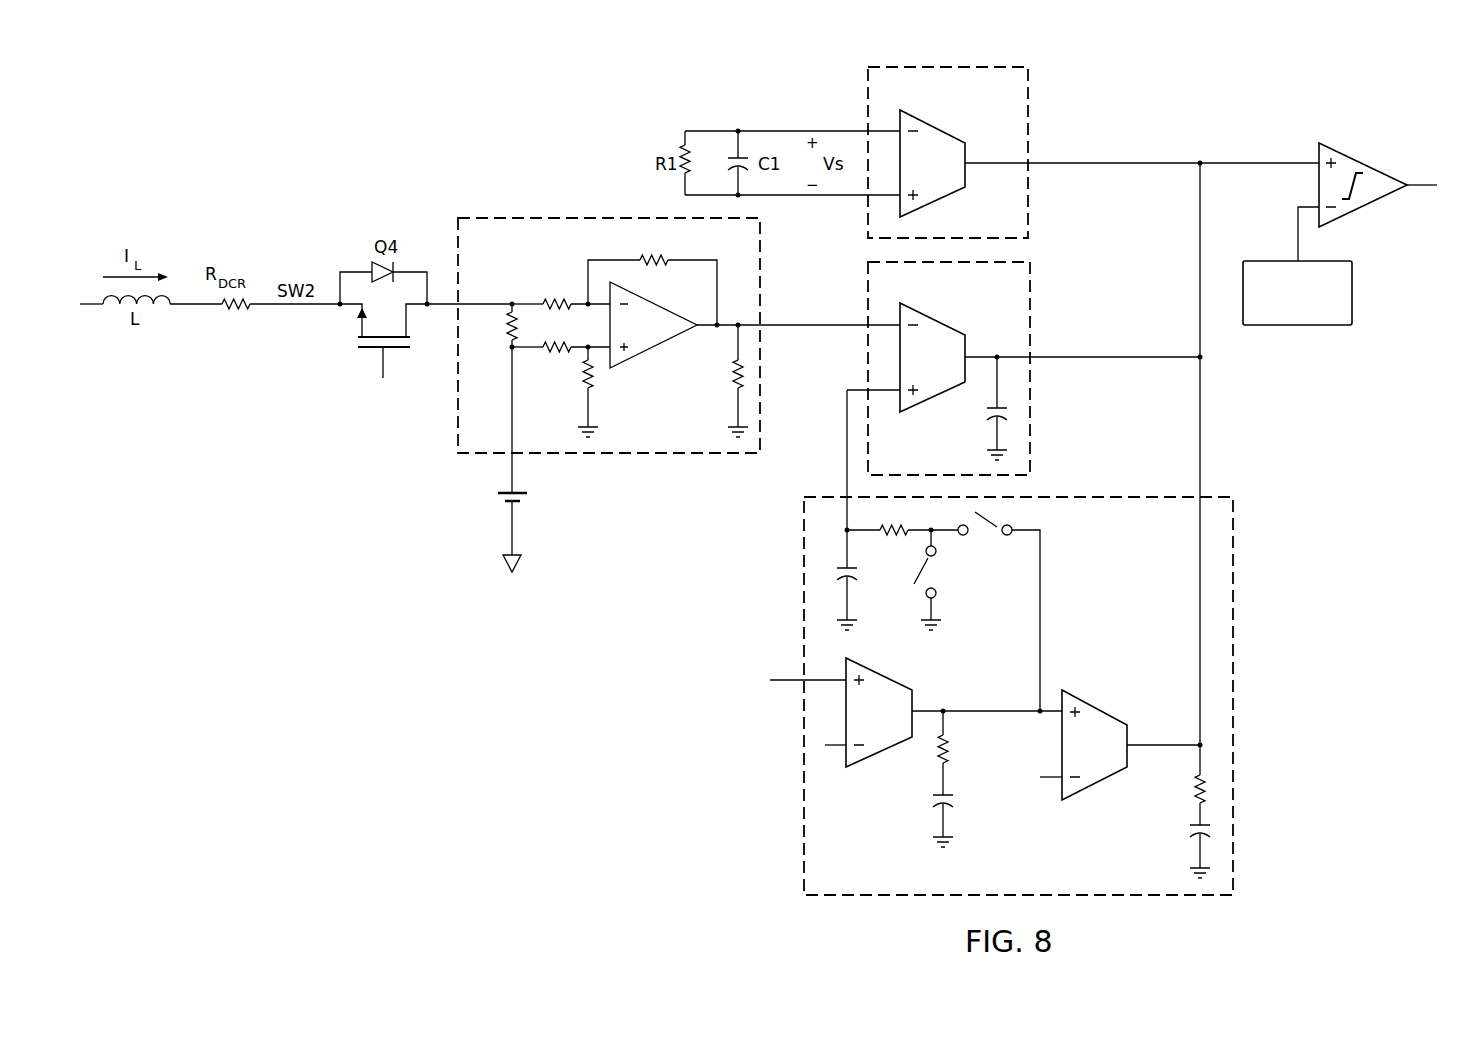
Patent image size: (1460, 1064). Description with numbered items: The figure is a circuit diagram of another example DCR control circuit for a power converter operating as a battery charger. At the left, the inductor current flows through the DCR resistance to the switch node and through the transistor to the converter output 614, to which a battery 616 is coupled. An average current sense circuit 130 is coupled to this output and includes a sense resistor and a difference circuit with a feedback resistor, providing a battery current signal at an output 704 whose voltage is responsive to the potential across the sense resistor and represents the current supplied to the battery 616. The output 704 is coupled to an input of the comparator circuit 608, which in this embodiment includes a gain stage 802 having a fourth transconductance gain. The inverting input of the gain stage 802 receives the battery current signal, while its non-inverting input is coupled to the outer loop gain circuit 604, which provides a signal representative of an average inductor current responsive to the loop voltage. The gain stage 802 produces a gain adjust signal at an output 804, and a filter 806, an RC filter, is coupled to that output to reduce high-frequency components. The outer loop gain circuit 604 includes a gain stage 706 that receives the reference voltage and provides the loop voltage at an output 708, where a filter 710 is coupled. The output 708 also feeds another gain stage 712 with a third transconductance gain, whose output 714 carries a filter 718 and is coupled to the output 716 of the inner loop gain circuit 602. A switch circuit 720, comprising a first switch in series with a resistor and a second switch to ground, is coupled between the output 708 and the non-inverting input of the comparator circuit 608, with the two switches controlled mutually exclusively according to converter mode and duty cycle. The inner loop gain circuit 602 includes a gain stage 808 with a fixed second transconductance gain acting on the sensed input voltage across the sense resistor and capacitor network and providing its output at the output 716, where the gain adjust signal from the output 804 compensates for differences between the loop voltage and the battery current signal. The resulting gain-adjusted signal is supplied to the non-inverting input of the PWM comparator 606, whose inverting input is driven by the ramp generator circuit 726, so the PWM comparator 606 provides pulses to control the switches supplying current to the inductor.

The average current sense circuit 130 is at (563, 212).
The inner loop gain circuit 602 is at (1038, 125).
The outer loop gain circuit 604 is at (1245, 718).
The PWM comparator 606 is at (1365, 160).
The comparator circuit 608 is at (1040, 312).
The output 614 is at (375, 352).
The battery 616 is at (493, 496).
The output 704 is at (818, 330).
The gain stage 706 is at (880, 757).
The output 708 is at (990, 718).
The filter 710 is at (975, 818).
The gain stage 712 is at (1093, 786).
The output 714 is at (1147, 752).
The output 716 is at (985, 170).
The filter 718 is at (1172, 838).
The switch circuit 720 is at (980, 601).
The ramp generator circuit 726 is at (1355, 292).
The gain stage 802 is at (932, 316).
The output 804 is at (1108, 372).
The filter 806 is at (985, 412).
The gain stage 808 is at (935, 122).